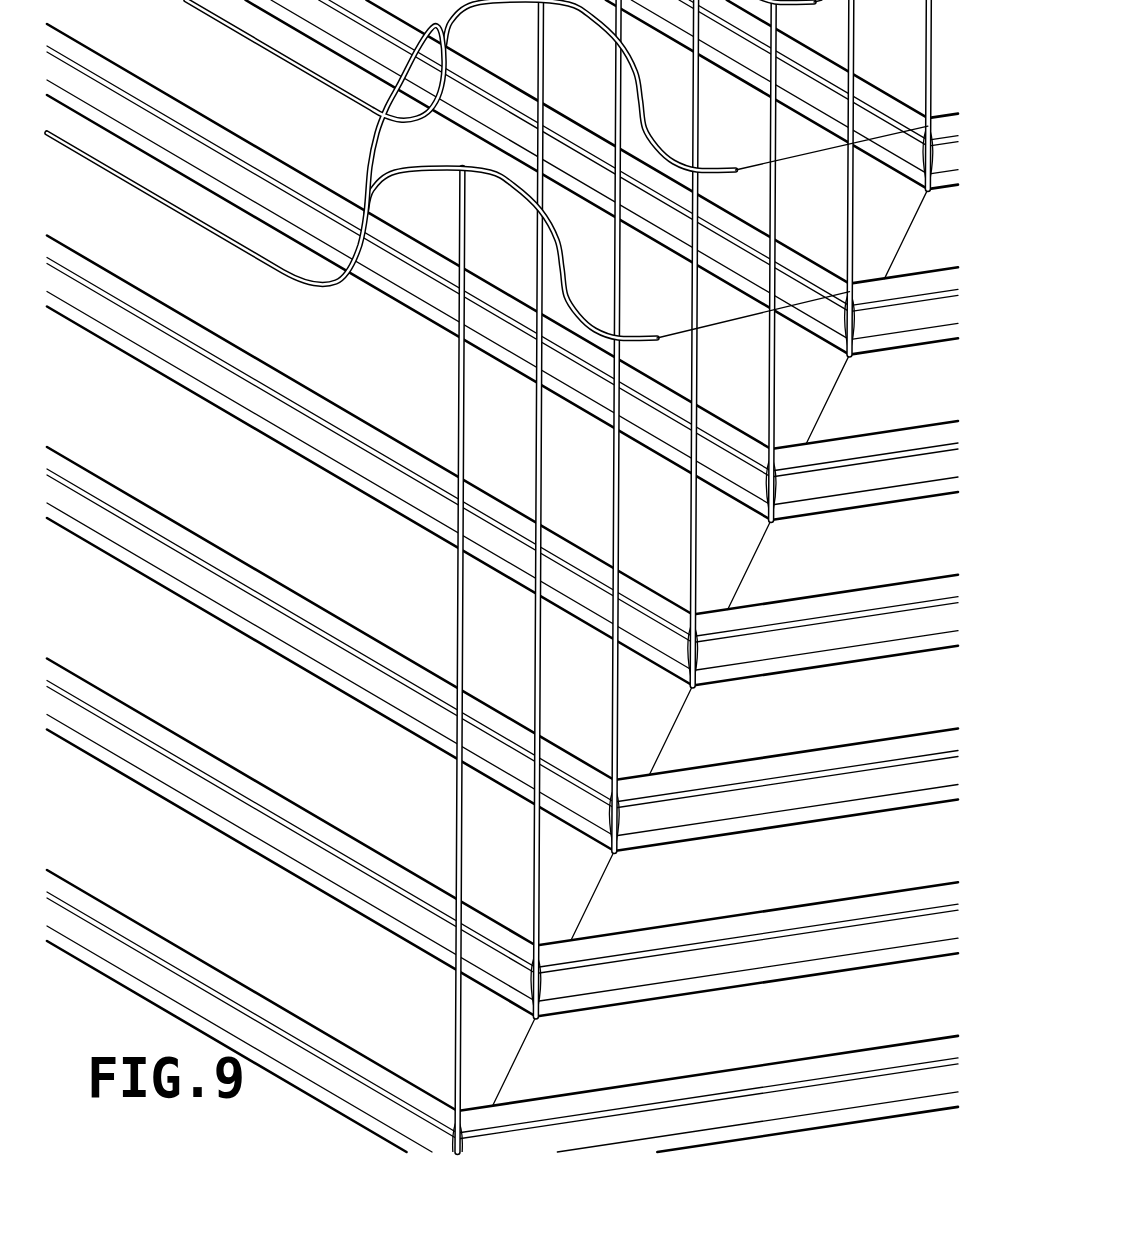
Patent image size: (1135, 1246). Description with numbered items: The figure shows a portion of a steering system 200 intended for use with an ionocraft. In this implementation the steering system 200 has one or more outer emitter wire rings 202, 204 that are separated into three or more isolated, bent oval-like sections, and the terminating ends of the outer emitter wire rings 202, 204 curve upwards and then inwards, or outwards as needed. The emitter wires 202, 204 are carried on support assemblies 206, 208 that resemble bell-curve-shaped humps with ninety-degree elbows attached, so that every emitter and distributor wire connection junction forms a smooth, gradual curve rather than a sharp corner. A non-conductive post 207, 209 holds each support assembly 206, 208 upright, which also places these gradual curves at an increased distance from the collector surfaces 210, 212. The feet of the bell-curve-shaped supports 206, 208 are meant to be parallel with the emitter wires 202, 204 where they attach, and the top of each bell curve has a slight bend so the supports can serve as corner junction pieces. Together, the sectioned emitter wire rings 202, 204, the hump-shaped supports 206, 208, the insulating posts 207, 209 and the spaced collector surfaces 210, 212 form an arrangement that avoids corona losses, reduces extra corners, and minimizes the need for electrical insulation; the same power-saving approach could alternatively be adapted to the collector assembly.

The steering system 200 is at (502, 591).
The outer emitter wire ring 202 is at (147, 195).
The outer emitter wire ring 204 is at (750, 328).
The support assembly 206 is at (570, 22).
The non-conductive post 207 is at (542, 424).
The support assembly 208 is at (565, 315).
The non-conductive post 209 is at (455, 613).
The collector surface 210 is at (803, 596).
The collector surface 212 is at (139, 282).